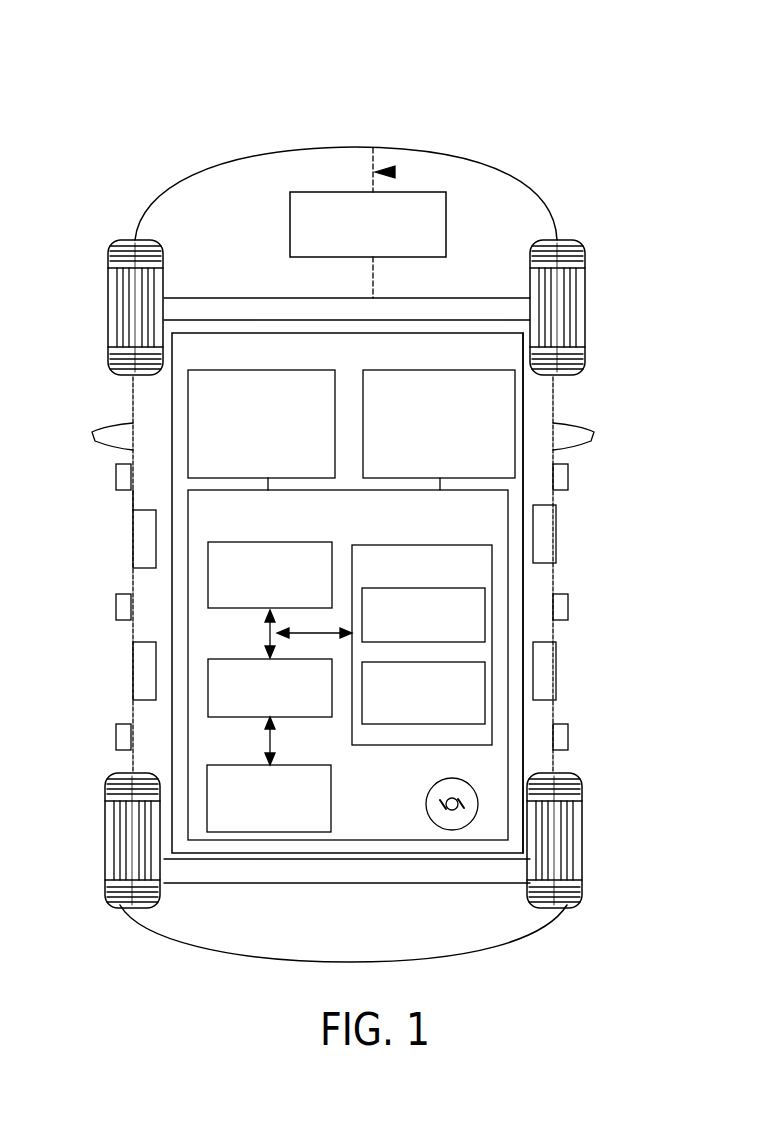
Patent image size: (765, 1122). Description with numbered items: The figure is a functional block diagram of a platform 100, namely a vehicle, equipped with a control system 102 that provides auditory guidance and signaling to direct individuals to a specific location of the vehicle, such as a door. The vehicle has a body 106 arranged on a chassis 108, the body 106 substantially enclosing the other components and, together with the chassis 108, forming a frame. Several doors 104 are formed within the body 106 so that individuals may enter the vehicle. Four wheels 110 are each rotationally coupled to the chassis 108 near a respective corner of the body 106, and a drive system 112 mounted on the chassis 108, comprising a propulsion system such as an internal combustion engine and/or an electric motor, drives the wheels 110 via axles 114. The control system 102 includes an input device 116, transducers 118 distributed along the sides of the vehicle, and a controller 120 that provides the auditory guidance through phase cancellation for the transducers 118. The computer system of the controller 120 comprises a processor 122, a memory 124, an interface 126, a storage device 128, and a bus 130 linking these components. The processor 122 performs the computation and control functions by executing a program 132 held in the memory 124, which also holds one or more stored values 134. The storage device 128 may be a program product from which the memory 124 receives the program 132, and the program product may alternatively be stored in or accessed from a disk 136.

The platform 100 is at (180, 78).
The control system 102 is at (263, 333).
The doors 104 is at (146, 545).
The body 106 is at (133, 495).
The chassis 108 is at (395, 170).
The wheels 110 is at (117, 302).
The drive system 112 is at (446, 205).
The axles 114 is at (465, 312).
The input device 116 is at (523, 425).
The transducers 118 is at (188, 415).
The controller 120 is at (187, 500).
The processor 122 is at (208, 598).
The memory 124 is at (493, 600).
The interface 126 is at (208, 690).
The storage device 128 is at (332, 815).
The bus 130 is at (270, 635).
The program 132 is at (485, 605).
The stored values 134 is at (485, 675).
The disk 136 is at (437, 788).